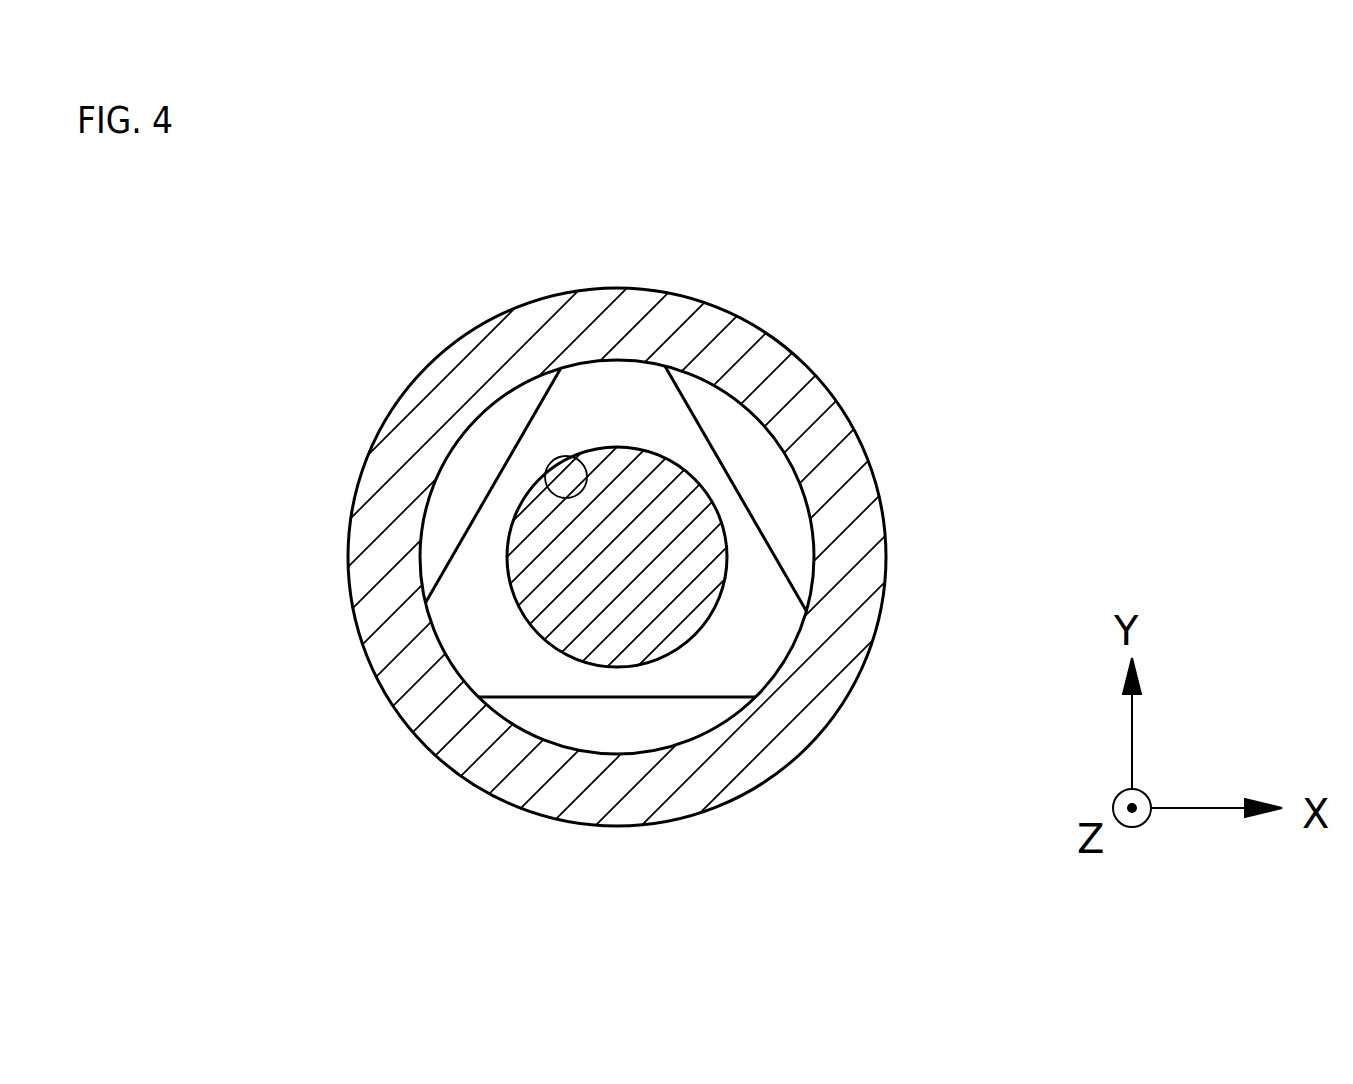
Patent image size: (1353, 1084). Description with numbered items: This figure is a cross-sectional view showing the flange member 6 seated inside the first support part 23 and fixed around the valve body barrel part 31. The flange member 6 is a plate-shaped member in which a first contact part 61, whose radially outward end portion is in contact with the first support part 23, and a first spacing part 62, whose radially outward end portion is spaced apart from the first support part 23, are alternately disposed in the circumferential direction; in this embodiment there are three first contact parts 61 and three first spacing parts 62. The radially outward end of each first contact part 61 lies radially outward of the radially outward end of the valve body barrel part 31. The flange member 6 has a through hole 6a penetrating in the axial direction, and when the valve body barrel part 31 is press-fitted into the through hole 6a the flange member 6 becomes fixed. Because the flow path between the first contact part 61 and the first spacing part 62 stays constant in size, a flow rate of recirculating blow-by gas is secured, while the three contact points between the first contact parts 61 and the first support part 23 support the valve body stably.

The flange member 6 is at (757, 548).
The through hole 6a is at (585, 487).
The first support part 23 is at (742, 347).
The valve body barrel part 31 is at (670, 630).
The first contact part 61 is at (624, 383).
The first spacing part 62 is at (495, 520).